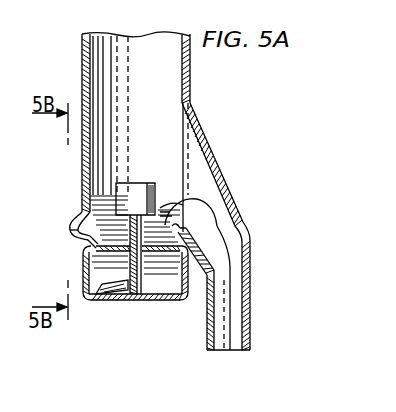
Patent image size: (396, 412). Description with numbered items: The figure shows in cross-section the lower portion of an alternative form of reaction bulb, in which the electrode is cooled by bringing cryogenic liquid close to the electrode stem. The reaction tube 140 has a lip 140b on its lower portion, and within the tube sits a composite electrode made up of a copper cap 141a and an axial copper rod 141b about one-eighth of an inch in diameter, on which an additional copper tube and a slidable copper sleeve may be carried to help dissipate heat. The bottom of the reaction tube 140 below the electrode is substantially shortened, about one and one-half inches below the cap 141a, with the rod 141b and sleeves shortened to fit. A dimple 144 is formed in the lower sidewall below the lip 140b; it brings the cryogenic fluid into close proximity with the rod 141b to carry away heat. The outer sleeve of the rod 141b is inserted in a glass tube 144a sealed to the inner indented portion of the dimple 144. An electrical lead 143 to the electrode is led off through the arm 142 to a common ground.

The reaction tube 140 is at (82, 166).
The lip 140b is at (78, 223).
The copper cap 141a is at (146, 183).
The axial copper rod 141b is at (146, 264).
The arm 142 is at (212, 152).
The electrical lead 143 is at (232, 373).
The dimple 144 is at (115, 262).
The glass tube 144a is at (150, 294).